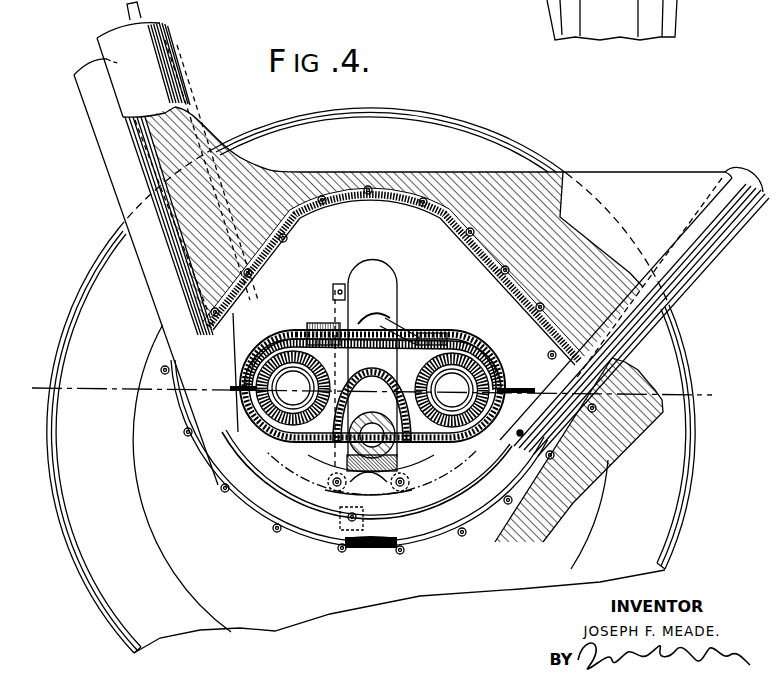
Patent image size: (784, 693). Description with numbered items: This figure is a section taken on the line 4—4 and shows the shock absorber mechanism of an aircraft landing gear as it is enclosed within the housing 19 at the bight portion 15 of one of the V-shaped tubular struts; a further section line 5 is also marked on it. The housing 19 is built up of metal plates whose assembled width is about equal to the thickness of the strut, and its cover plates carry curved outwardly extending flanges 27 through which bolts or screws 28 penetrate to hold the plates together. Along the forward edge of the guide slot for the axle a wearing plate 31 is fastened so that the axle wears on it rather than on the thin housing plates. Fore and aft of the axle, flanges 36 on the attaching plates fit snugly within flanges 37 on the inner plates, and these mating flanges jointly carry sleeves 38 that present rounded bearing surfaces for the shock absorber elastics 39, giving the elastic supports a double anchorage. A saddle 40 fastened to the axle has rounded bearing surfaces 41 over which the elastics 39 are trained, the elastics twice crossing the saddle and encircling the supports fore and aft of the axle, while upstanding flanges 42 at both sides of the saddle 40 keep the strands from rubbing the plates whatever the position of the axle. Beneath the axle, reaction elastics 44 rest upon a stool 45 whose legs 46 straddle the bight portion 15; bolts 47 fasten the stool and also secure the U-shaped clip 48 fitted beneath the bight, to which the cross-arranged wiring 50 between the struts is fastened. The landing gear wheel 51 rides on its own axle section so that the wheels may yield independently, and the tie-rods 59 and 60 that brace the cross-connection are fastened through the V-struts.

The section line 4— 4 is at (441, 0).
The section line 5- 5 is at (372, 398).
The bight portion 15 is at (463, 0).
The housing 19 is at (495, 232).
The outwardly extending flange 27 is at (486, 40).
The bolts or screws 28 is at (225, 492).
The wearing plate 31 is at (334, 292).
The flanges 36 is at (495, 380).
The flanges 37 is at (490, 358).
The sleeves 38 is at (450, 336).
The shock absorber elastics 39 is at (373, 385).
The saddle 40 is at (400, 442).
The rounded bearing surfaces 41 is at (410, 343).
The upstanding flanges 42 is at (398, 318).
The reaction elastics 44 is at (418, 478).
The stool 45 is at (406, 505).
The legs 46 is at (322, 493).
The bolts 47 is at (337, 487).
The U-shaped clip 48 is at (366, 549).
The wiring 50 is at (140, 12).
The wheel 51 is at (485, 138).
The tie-rod 59 is at (205, 475).
The tie-rod 60 is at (522, 433).